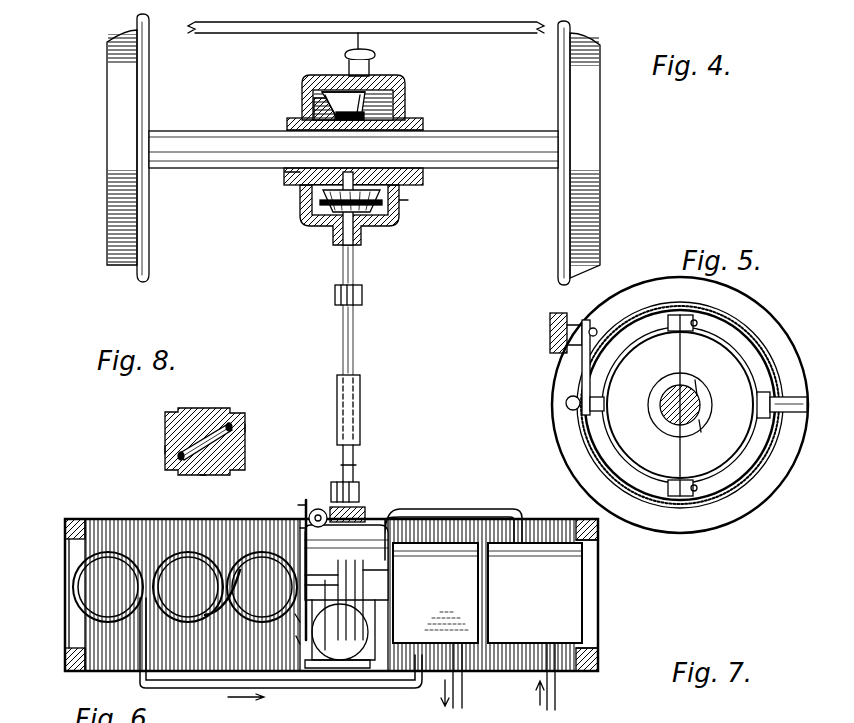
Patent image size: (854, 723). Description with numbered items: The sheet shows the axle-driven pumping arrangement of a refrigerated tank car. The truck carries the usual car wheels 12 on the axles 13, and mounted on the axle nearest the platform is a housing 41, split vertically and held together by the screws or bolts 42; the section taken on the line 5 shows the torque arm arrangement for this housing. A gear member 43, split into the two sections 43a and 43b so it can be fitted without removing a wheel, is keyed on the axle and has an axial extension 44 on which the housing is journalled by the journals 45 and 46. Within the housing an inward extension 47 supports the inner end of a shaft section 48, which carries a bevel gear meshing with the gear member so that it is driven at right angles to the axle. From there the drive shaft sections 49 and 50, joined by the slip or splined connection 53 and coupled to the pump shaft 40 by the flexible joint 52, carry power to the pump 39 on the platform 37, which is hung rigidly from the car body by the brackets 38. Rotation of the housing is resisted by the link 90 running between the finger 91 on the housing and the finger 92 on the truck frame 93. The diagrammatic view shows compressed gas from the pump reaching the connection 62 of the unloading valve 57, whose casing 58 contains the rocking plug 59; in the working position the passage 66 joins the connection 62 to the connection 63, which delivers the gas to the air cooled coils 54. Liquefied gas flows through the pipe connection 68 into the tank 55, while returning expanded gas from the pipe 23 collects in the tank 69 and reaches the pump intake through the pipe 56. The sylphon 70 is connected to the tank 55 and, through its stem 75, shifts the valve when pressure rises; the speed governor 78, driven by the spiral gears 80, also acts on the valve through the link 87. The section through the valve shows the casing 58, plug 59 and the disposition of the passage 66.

In FIG. 4, the section line 5— 5 is at (232, 61).
In FIG. 4, the car wheels 12 is at (118, 205).
In FIG. 4, the axles 13 is at (498, 160).
In FIG. 5, the axles 13 is at (667, 410).
In FIG. 7, the return or expanded gas tube or pipe 23 is at (556, 706).
In FIG. 7, the platform 37 is at (485, 660).
In FIG. 7, the brackets 38 is at (82, 517).
In FIG. 7, the pump 39 is at (318, 667).
In FIG. 7, the pump shaft 40 is at (372, 535).
In FIG. 4, the housing 41 is at (417, 104).
In FIG. 5, the housing 41 is at (690, 385).
In FIG. 5, the screws or bolts 42 is at (700, 322).
In FIG. 4, the gear member 43 is at (285, 200).
In FIG. 4, the gear member section 43a is at (300, 174).
In FIG. 5, the gear member section 43a is at (660, 378).
In FIG. 4, the gear member section 43b is at (290, 125).
In FIG. 5, the gear member section 43b is at (698, 425).
In FIG. 4, the axial extension 44 is at (410, 123).
In FIG. 4, the housing journal 45 is at (405, 190).
In FIG. 4, the housing journal 46 is at (310, 118).
In FIG. 4, the inward extension 47 is at (368, 85).
In FIG. 4, the shaft section 48 is at (356, 275).
In FIG. 5, the shaft section 48 is at (805, 412).
In FIG. 4, the drive shaft section 49 is at (356, 352).
In FIG. 7, the drive shaft section 50 is at (356, 472).
In FIG. 7, the universal or flexible joint 52 is at (365, 490).
In FIG. 4, the slip or splined connection 53 is at (362, 415).
In FIG. 7, the air cooled coils 54 is at (246, 556).
In FIG. 7, the tank or container for liquefied gas 55 is at (435, 593).
In FIG. 7, the pipe 56 is at (522, 510).
In FIG. 4, the unloading or control valve 57 is at (364, 296).
In FIG. 8, the casing 58 is at (165, 420).
In FIG. 8, the rocking plug 59 is at (205, 412).
In FIG. 8, the connection 62 is at (245, 428).
In FIG. 8, the connection 63 is at (165, 450).
In FIG. 8, the passage 66 is at (203, 442).
In FIG. 7, the pipe connection 68 is at (200, 688).
In FIG. 7, the tank or receptacle 69 is at (535, 593).
In FIG. 7, the sylphon 70 is at (298, 640).
In FIG. 7, the stem 75 is at (295, 618).
In FIG. 7, the speed governor 78 is at (300, 513).
In FIG. 7, the spiral gears 80 is at (312, 515).
In FIG. 7, the link 87 is at (300, 528).
In FIG. 5, the link 90 is at (582, 375).
In FIG. 5, the finger 91 is at (568, 408).
In FIG. 4, the finger 92 is at (345, 47).
In FIG. 5, the finger 92 is at (580, 318).
In FIG. 4, the truck frame 93 is at (507, 33).
In FIG. 5, the truck frame 93 is at (550, 335).